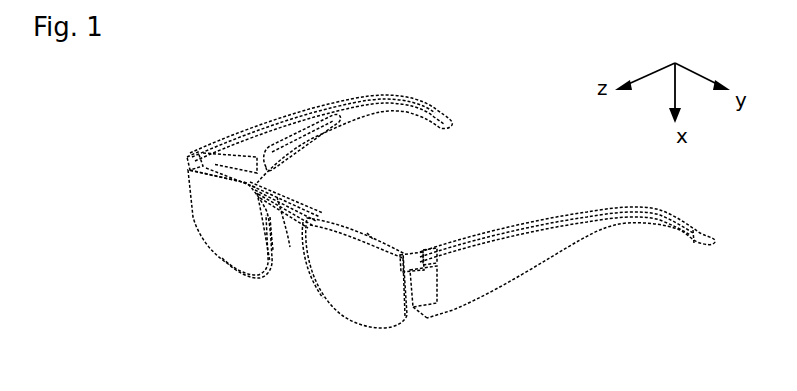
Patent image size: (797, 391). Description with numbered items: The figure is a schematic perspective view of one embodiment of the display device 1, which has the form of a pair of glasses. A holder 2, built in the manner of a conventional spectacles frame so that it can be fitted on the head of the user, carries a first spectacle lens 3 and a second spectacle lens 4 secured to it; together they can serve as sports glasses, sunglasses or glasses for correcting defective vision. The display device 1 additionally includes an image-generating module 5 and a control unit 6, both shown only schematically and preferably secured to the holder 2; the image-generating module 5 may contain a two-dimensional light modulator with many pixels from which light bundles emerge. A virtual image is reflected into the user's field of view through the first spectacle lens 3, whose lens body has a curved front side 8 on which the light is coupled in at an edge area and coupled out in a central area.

The display device 1 is at (257, 321).
The holder 2 is at (343, 102).
The first spectacle lens 3 is at (345, 318).
The second spectacle lens 4 is at (239, 271).
The image-generating module 5 is at (243, 158).
The control unit 6 is at (223, 178).
The front side 8 is at (215, 238).